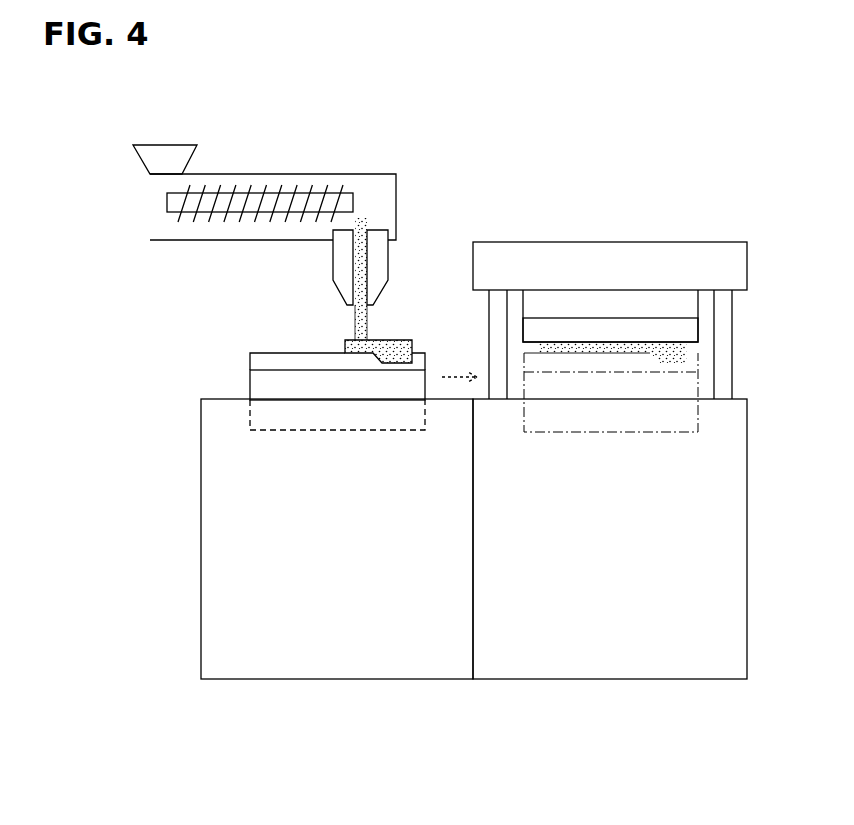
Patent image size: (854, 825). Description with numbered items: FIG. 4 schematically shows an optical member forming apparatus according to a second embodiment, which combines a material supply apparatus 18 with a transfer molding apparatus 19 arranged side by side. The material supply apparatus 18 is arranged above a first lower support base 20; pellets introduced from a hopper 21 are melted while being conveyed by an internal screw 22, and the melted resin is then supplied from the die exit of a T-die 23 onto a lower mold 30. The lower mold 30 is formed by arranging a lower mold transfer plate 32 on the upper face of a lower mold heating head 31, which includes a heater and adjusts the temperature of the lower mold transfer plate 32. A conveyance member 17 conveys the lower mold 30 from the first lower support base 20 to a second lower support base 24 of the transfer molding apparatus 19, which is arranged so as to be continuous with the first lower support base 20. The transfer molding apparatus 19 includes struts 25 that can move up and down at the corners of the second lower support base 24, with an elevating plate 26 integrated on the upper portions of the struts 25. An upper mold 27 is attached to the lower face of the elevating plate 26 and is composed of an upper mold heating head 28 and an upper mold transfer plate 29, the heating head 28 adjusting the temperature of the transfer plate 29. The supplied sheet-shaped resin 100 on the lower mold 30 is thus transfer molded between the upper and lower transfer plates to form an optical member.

The conveyance member 17 is at (250, 430).
The material supply apparatus 18 is at (244, 198).
The transfer molding apparatus 19 is at (645, 251).
The first lower support base 20 is at (325, 660).
The hopper 21 is at (173, 144).
The internal screw 22 is at (170, 203).
The T-die 23 is at (340, 269).
The second lower support base 24 is at (622, 655).
The struts 25 is at (725, 333).
The elevating plate 26 is at (738, 243).
The upper mold 27 is at (605, 235).
The upper mold heating head 28 is at (550, 300).
The upper mold transfer plate 29 is at (578, 325).
The lower mold 30 is at (240, 354).
The lower mold heating head 31 is at (253, 386).
The lower mold transfer plate 32 is at (257, 357).
The sheet-shaped resin 100 is at (690, 352).